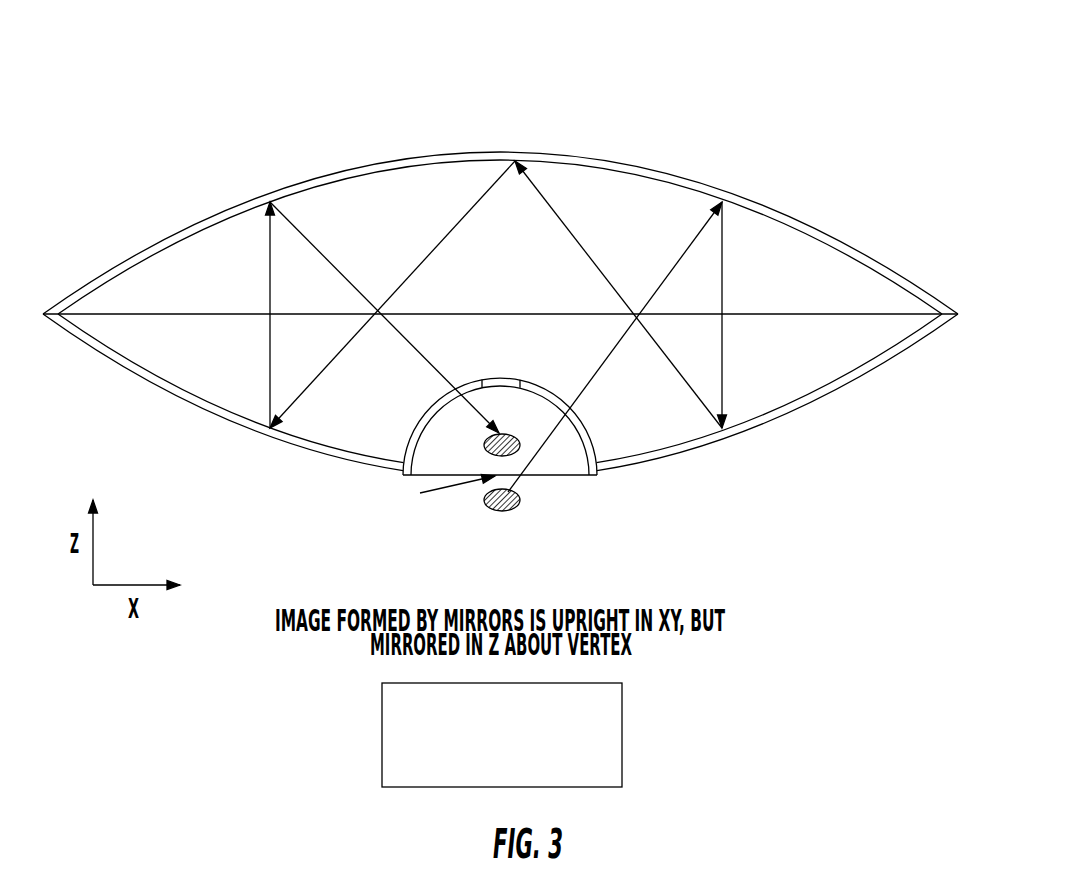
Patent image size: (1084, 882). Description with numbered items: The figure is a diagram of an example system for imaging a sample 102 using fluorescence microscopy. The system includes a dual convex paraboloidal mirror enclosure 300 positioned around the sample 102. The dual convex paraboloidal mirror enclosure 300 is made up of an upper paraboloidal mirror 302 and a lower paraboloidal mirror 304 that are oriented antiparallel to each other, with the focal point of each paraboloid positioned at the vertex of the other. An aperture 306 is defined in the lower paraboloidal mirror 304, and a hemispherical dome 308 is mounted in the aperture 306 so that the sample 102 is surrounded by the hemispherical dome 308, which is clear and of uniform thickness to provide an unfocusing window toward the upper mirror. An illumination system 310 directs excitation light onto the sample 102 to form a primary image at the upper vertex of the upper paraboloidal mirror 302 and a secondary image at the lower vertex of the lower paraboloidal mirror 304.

The dual convex paraboloidal mirror enclosure 300 is at (272, 52).
The upper paraboloidal mirror 302 is at (177, 234).
The lower paraboloidal mirror 304 is at (158, 388).
The aperture 306 is at (580, 477).
The hemispherical dome 308 is at (596, 446).
The sample 102 is at (502, 511).
The illumination system 310 is at (622, 735).